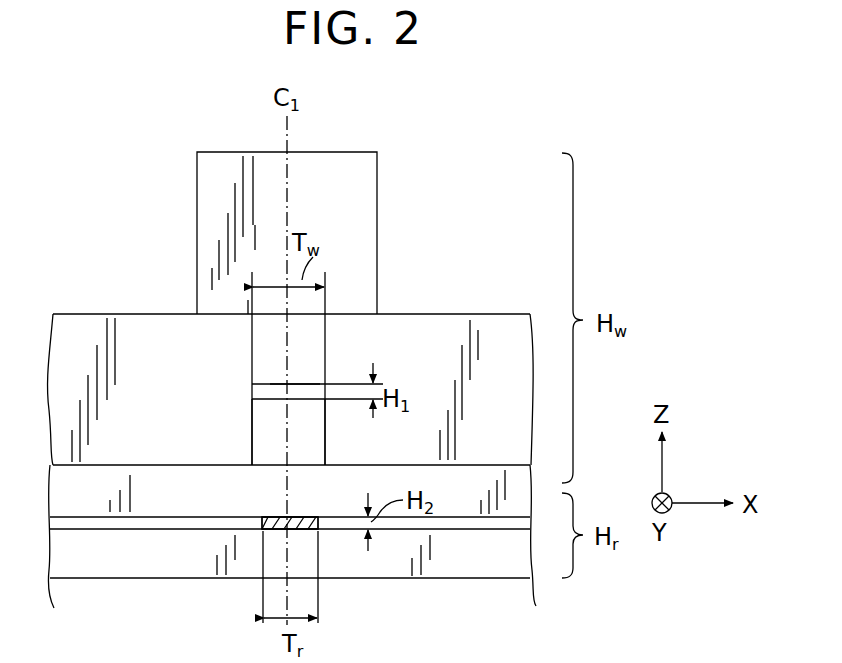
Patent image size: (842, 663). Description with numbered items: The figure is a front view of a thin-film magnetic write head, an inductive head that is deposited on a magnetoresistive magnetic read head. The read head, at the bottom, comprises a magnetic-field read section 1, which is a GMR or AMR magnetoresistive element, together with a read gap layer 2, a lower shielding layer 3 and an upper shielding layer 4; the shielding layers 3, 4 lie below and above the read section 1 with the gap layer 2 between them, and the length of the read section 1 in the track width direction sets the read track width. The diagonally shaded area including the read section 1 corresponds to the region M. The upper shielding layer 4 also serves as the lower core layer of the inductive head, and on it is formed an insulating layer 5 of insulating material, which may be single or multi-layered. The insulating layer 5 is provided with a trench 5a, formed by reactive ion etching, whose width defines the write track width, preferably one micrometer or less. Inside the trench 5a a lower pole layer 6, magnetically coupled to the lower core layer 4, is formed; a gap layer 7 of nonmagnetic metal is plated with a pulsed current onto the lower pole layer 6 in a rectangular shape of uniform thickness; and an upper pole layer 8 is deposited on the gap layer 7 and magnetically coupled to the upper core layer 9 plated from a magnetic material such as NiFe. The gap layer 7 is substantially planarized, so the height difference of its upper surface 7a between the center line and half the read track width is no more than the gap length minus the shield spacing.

The magnetic-field read section 1 is at (307, 511).
The read gap layer 2 is at (155, 520).
The lower shielding layer 3 is at (360, 568).
The upper shielding layer 4 is at (452, 510).
The insulating layer 5 is at (497, 335).
The trench 5a is at (243, 337).
The lower pole layer 6 is at (263, 430).
The gap layer 7 is at (263, 392).
The upper surface of the gap layer 7a is at (306, 380).
The upper pole layer 8 is at (273, 365).
The upper core layer 9 is at (356, 185).
The region M is at (270, 519).